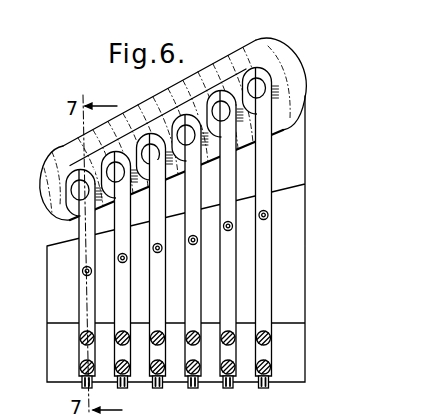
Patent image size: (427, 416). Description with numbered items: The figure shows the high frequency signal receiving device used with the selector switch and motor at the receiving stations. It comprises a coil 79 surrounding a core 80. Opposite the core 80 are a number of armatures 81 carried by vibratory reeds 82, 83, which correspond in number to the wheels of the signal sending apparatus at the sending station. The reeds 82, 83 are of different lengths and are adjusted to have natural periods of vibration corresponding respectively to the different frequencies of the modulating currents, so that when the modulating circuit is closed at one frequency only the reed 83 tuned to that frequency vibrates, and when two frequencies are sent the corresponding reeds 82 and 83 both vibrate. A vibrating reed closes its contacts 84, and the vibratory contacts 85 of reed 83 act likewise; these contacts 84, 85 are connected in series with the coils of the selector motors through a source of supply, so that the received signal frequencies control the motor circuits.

The coil 79 is at (279, 56).
The core 80 is at (147, 228).
The armatures 81 is at (168, 128).
The vibratory reed 82 is at (58, 279).
The vibratory reed 83 is at (117, 292).
The contacts 84 is at (83, 271).
The vibratory contacts 85 is at (85, 253).